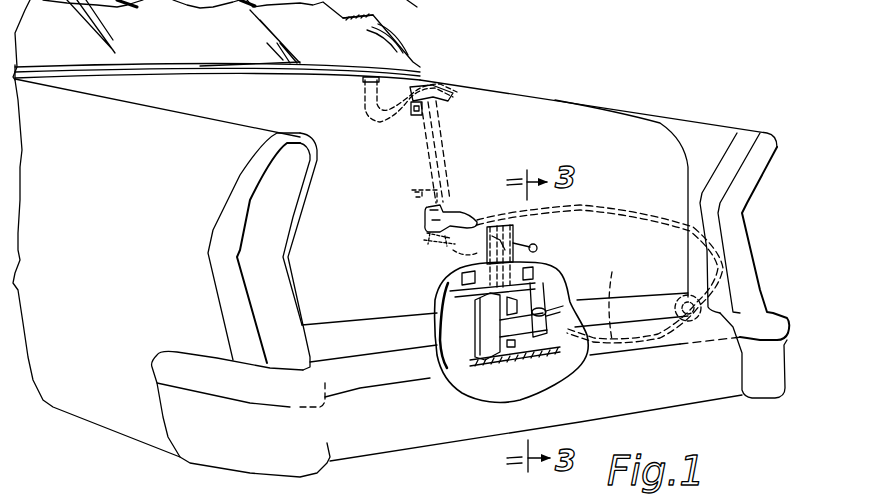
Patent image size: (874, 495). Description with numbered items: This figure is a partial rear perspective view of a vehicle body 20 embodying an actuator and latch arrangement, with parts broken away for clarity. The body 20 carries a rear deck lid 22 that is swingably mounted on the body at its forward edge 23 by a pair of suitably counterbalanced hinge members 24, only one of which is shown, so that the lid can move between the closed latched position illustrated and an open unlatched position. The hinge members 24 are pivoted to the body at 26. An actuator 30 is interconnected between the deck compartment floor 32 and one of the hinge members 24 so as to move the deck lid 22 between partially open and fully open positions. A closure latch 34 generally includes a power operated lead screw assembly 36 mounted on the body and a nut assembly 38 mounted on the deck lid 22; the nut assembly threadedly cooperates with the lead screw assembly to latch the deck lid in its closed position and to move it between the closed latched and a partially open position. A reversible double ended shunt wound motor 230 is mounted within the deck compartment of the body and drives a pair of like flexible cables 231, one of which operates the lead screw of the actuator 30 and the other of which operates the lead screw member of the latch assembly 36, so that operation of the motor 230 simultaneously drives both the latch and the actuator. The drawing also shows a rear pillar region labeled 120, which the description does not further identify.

The vehicle body 20 is at (398, 27).
The rear deck lid 22 is at (510, 97).
The forward edge 23 is at (284, 78).
The hinge member 24 is at (350, 92).
The hinge pivot 26 is at (365, 80).
The actuator 30 is at (437, 143).
The deck compartment floor 32 is at (455, 350).
The closure latch 34 is at (477, 253).
The lead screw assembly 36 is at (473, 335).
The nut assembly 38 is at (520, 263).
The rear pillar 120 is at (640, 135).
The reversible double ended shunt wound motor 230 is at (689, 296).
The flexible cables 231 is at (627, 213).